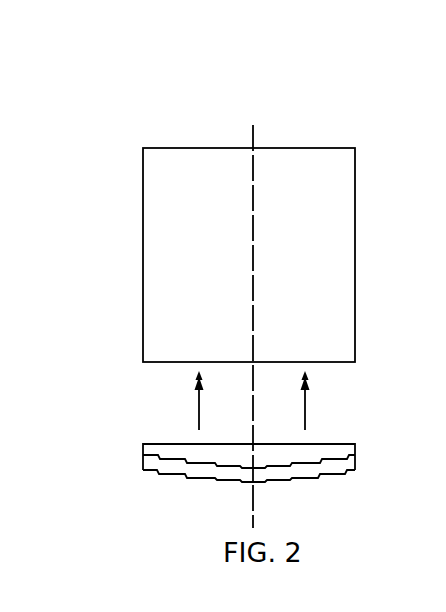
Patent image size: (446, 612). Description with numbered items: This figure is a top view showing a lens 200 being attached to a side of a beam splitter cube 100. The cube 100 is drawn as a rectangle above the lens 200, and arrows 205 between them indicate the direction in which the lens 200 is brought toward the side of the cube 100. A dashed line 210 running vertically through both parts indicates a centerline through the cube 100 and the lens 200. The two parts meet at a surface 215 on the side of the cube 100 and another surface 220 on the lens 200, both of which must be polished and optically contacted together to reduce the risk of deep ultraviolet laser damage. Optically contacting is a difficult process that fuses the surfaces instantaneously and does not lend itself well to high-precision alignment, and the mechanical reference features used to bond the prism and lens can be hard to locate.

The beam splitter cube 100 is at (241, 301).
The lens 200 is at (264, 458).
The arrows 205 is at (200, 400).
The line 210 is at (313, 319).
The surface 215 is at (287, 270).
The surface 220 is at (287, 440).